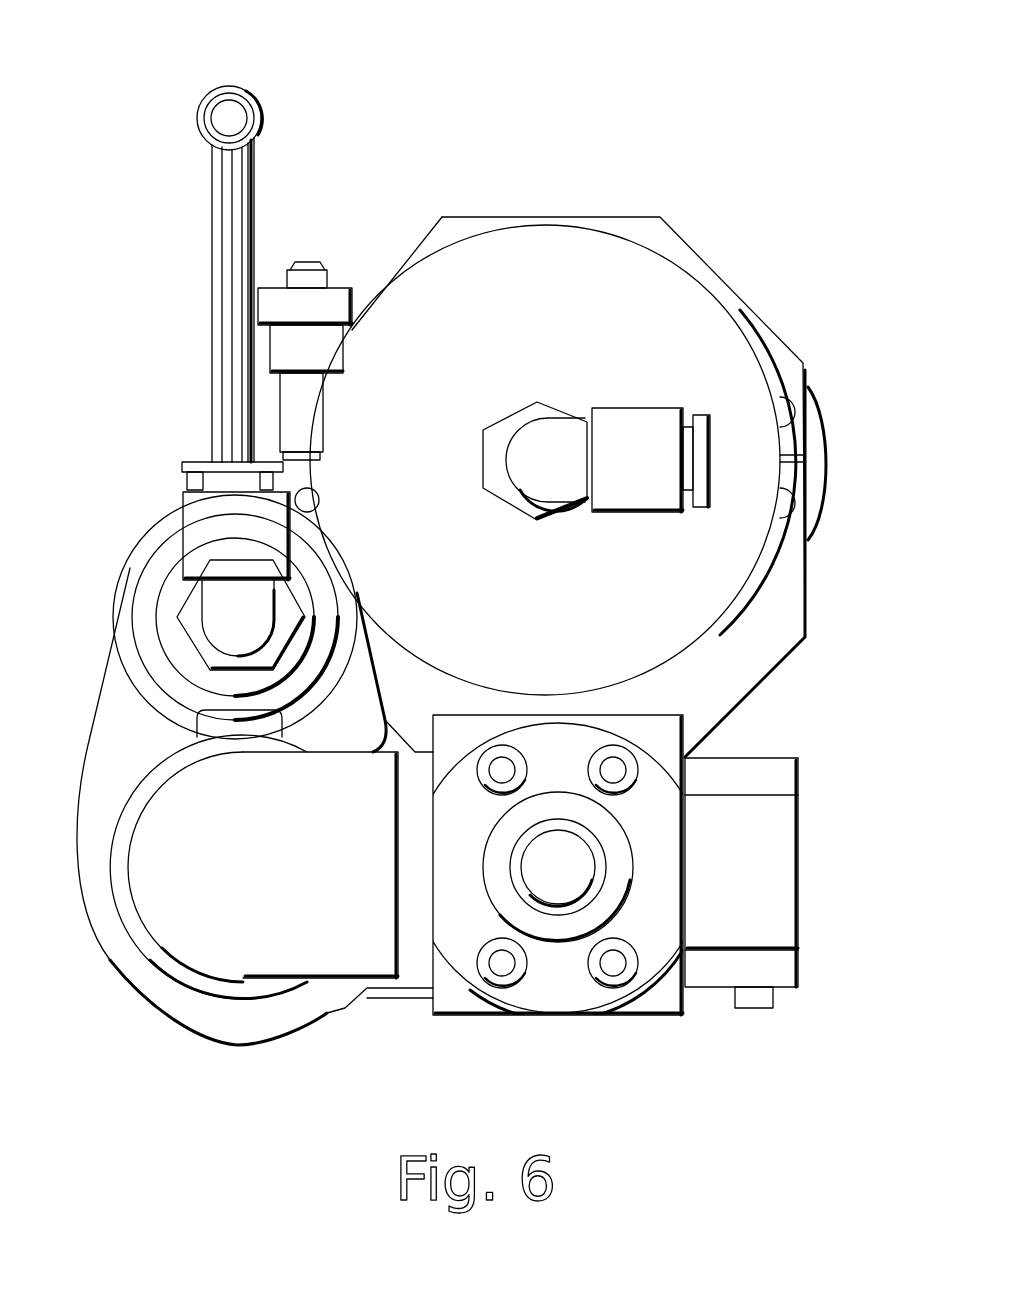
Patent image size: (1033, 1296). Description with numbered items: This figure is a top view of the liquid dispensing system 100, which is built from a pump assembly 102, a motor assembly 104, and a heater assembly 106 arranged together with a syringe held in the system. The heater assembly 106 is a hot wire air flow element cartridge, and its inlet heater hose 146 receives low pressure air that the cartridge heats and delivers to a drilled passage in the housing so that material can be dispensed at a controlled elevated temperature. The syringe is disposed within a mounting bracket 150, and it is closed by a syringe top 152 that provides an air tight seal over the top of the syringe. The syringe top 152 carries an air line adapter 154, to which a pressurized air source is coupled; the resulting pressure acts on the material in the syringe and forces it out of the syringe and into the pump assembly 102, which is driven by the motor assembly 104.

The liquid dispensing system 100 is at (642, 82).
The pump assembly 102 is at (548, 990).
The motor assembly 104 is at (282, 877).
The heater assembly 106 is at (138, 585).
The inlet heater hose 146 is at (255, 192).
The mounting bracket 150 is at (787, 598).
The syringe top 152 is at (697, 280).
The air line adapter 154 is at (661, 474).